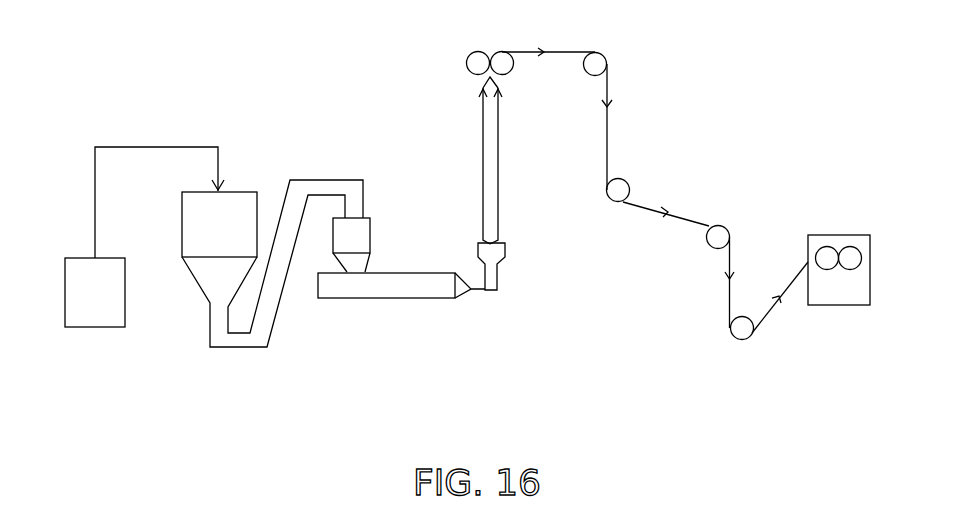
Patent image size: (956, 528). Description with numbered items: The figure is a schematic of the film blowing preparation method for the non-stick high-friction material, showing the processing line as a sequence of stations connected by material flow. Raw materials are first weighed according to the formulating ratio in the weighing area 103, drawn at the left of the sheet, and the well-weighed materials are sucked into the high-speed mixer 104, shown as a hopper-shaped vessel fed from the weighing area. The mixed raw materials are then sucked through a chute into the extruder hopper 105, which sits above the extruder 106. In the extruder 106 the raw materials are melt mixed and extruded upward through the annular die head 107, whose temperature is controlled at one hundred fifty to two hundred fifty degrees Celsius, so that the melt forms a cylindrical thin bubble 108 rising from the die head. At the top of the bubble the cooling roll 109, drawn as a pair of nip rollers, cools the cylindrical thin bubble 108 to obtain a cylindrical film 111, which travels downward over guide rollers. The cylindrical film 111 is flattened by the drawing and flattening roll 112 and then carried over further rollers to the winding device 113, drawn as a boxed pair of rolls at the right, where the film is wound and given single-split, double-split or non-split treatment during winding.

The weighing area 103 is at (82, 318).
The high-speed mixer 104 is at (228, 222).
The extruder hopper 105 is at (358, 248).
The extruder 106 is at (382, 298).
The annular die head 107 is at (498, 260).
The cylindrical thin bubble 108 is at (498, 211).
The cooling roll 109 is at (488, 52).
The cylindrical film 111 is at (608, 142).
The drawing and flattening roll 112 is at (630, 188).
The winding device 113 is at (841, 246).